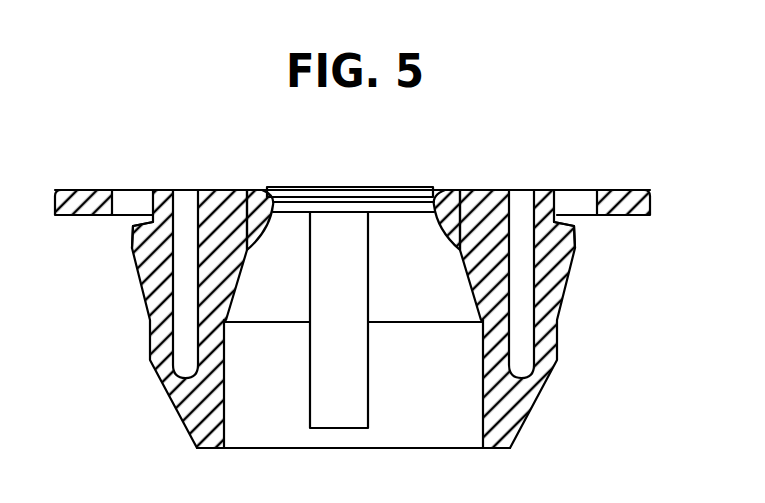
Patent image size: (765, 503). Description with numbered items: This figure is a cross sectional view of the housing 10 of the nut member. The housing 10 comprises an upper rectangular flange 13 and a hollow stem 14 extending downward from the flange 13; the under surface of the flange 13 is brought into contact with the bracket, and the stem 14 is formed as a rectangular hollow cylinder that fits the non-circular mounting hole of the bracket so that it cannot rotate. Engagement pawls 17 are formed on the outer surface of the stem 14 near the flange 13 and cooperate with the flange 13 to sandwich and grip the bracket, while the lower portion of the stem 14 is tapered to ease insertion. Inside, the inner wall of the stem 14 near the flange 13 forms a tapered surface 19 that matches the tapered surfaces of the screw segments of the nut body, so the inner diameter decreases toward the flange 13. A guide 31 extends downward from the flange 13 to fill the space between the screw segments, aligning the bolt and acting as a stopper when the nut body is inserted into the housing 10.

The housing 10 is at (493, 161).
The flange 13 is at (88, 198).
The stem 14 is at (202, 415).
The engagement pawl 17 is at (134, 254).
The tapered surface 19 is at (258, 195).
The guide 31 is at (353, 385).